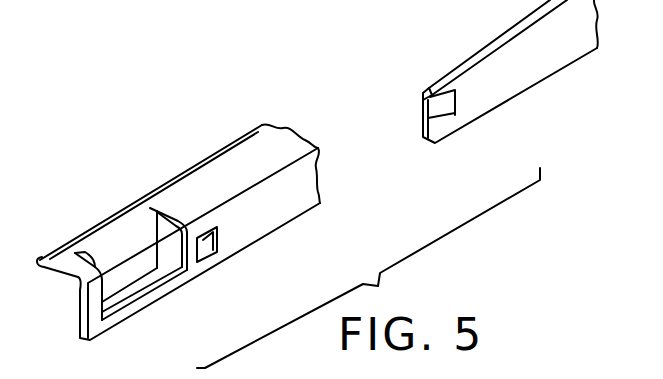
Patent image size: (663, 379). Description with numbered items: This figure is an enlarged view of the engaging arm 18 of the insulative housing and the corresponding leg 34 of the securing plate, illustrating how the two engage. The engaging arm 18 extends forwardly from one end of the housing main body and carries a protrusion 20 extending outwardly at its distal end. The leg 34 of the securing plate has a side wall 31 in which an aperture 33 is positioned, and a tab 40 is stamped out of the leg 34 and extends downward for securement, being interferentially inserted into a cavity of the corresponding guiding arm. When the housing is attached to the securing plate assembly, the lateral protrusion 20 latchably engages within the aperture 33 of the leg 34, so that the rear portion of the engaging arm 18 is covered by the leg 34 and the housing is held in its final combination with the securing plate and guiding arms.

The engaging arm 18 is at (523, 84).
The protrusion 20 is at (445, 108).
The side wall 31 is at (195, 232).
The aperture 33 is at (205, 247).
The leg 34 is at (217, 182).
The tab 40 is at (130, 268).